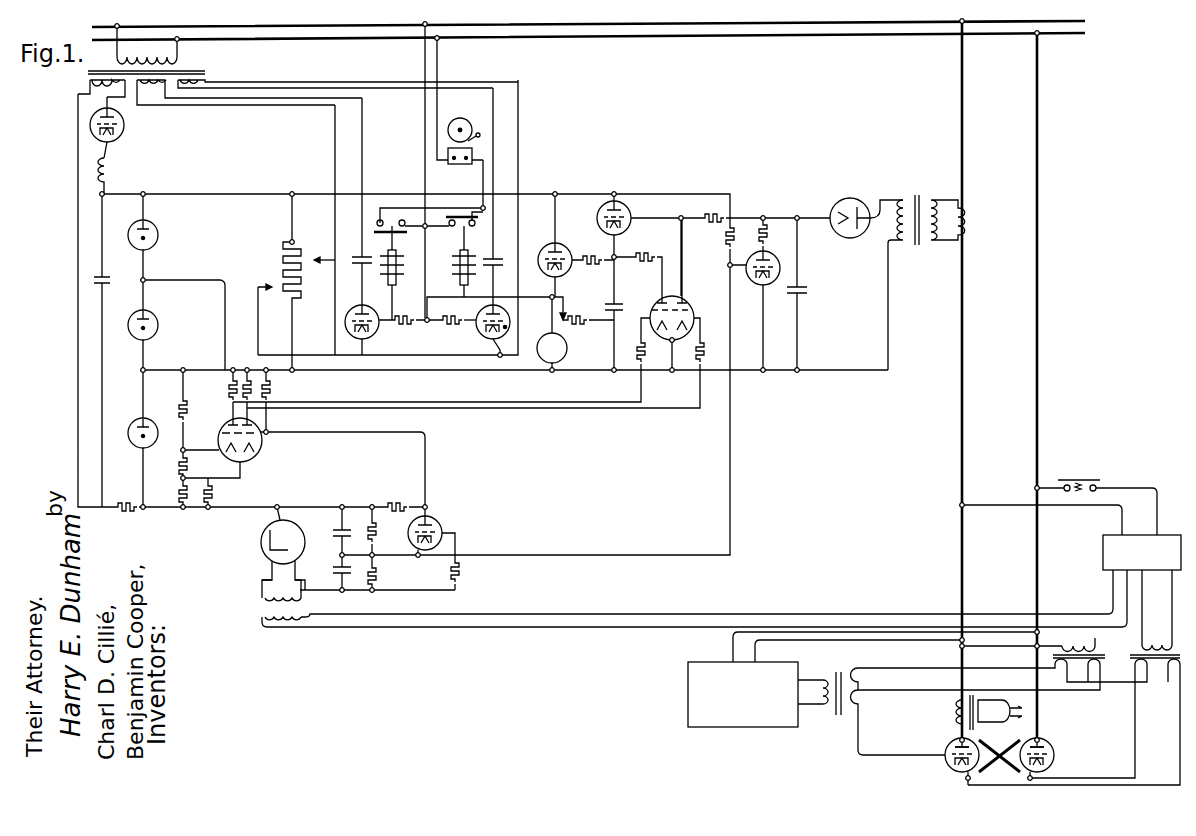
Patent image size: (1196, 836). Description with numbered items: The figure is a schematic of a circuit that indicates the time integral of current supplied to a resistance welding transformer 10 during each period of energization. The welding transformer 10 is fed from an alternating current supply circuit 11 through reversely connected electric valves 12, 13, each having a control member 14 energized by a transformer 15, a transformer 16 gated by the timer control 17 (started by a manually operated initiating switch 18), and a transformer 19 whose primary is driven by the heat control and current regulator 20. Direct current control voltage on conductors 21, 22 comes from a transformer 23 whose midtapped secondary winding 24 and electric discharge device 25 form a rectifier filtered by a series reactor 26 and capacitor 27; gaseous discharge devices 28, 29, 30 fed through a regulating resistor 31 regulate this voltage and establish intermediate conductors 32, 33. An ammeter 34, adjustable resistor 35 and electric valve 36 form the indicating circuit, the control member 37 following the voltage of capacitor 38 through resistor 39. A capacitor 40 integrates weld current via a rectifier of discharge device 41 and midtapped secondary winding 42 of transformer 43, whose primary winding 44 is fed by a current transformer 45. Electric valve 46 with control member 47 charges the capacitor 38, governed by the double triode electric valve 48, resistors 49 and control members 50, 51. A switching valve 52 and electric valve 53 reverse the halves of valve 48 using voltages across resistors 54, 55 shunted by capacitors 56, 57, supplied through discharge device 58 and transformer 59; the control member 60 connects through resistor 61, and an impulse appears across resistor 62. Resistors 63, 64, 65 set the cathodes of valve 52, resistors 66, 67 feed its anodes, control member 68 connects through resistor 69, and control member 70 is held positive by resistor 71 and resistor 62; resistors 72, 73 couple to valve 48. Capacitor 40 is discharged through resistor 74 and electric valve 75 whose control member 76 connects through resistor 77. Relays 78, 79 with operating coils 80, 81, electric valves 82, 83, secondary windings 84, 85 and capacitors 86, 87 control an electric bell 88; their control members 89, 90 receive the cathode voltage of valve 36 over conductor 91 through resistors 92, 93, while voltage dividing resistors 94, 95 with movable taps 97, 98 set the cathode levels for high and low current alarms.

The resistance welding transformer 10 is at (947, 716).
The alternating current supply circuit 11 is at (1085, 21).
The electric valve 12 is at (945, 766).
The electric valve 13 is at (1054, 766).
The control member 14 is at (951, 748).
The transformer 15 is at (1124, 653).
The transformer 16 is at (1195, 653).
The timer control 17 is at (1170, 534).
The manually operated initiating switch 18 is at (1090, 479).
The transformer 19 is at (843, 662).
The heat control and current regulator 20 is at (745, 727).
The conductor 21 is at (183, 194).
The conductor 22 is at (166, 509).
The transformer 23 is at (209, 61).
The midtapped secondary winding 24 is at (88, 82).
The electric discharge device 25 is at (123, 137).
The series reactor 26 is at (110, 169).
The capacitor 27 is at (107, 278).
The gaseous discharge device 28 is at (158, 235).
The gaseous discharge device 29 is at (158, 325).
The gaseous discharge device 30 is at (147, 420).
The regulating resistor 31 is at (120, 503).
The conductor 32 is at (182, 280).
The conductor 33 is at (170, 370).
The ammeter 34 is at (567, 348).
The resistor 35 is at (556, 308).
The electric valve 36 is at (568, 244).
The control member 37 is at (549, 253).
The capacitor 38 is at (588, 329).
The current limiting resistor 39 is at (593, 271).
The capacitor 40 is at (808, 290).
The electric discharge device 41 is at (852, 199).
The midtapped secondary winding 42 is at (901, 246).
The transformer 43 is at (923, 190).
The primary winding 44 is at (931, 246).
The current transformer 45 is at (969, 225).
The electric valve 46 is at (630, 217).
The control member 47 is at (598, 216).
The double triode electric valve 48 is at (680, 299).
The resistor 49 is at (700, 212).
The control member 50 is at (658, 306).
The control member 51 is at (691, 306).
The switching valve 52 is at (258, 455).
The electric valve 53 is at (429, 514).
The resistor 54 is at (376, 528).
The resistor 55 is at (378, 571).
The capacitor 56 is at (332, 531).
The capacitor 57 is at (334, 570).
The discharge device 58 is at (261, 542).
The transformer 59 is at (260, 607).
The control member 60 is at (443, 528).
The current limiting resistor 61 is at (463, 573).
The resistor 62 is at (397, 503).
The resistor 63 is at (181, 398).
The resistor 64 is at (178, 467).
The resistor 65 is at (176, 492).
The resistor 66 is at (227, 382).
The resistor 67 is at (245, 373).
The control member 68 is at (215, 439).
The resistor 69 is at (216, 493).
The control member 70 is at (263, 438).
The resistor 71 is at (273, 383).
The current limiting resistor 72 is at (641, 337).
The current limiting resistor 73 is at (702, 338).
The resistor 74 is at (768, 228).
The electric valve 75 is at (772, 260).
The control member 76 is at (754, 262).
The resistor 77 is at (727, 240).
The relay 78 is at (399, 238).
The relay 79 is at (464, 228).
The operating coil 80 is at (404, 264).
The operating coil 81 is at (454, 272).
The electric valve 82 is at (358, 315).
The electric valve 83 is at (484, 318).
The secondary winding 84 is at (152, 83).
The secondary winding 85 is at (205, 80).
The capacitor 86 is at (359, 265).
The capacitor 87 is at (497, 264).
The electric bell 88 is at (466, 120).
The control member 89 is at (378, 334).
The control member 90 is at (505, 320).
The conductor 91 is at (483, 297).
The current limiting resistor 92 is at (397, 316).
The current limiting resistor 93 is at (450, 326).
The voltage dividing resistor 94 is at (275, 255).
The voltage dividing resistor 95 is at (297, 241).
The movable tap 97 is at (265, 284).
The movable tap 98 is at (318, 257).